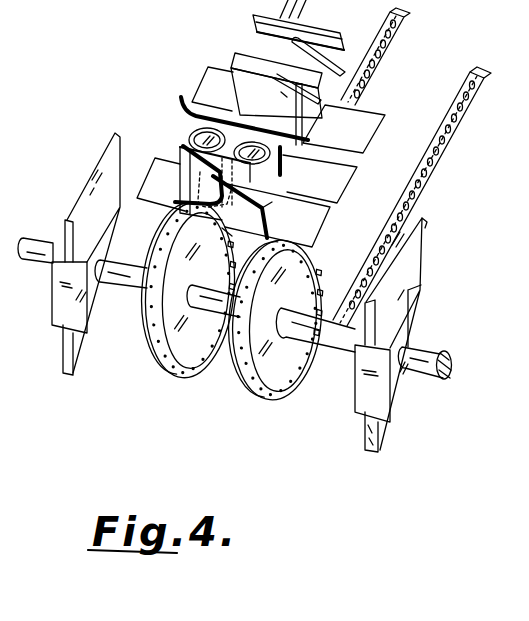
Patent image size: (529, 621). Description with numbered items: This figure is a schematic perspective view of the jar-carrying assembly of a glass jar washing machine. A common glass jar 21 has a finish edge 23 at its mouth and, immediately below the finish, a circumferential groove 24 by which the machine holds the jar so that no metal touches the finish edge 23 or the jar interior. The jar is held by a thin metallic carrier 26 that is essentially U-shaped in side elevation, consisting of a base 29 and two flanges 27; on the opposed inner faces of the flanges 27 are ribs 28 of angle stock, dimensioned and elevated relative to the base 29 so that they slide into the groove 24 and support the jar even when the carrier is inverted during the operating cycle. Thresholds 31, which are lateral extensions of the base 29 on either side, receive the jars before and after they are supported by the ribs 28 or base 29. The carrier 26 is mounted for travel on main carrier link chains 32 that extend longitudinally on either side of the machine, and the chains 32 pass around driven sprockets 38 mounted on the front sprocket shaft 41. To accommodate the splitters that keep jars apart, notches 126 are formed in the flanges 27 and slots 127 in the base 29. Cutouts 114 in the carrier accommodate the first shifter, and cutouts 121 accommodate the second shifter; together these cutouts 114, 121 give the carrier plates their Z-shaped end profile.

The glass jar 21 is at (268, 208).
The finish edge 23 is at (196, 130).
The circumferential groove 24 is at (287, 160).
The carrier 26 is at (357, 115).
The flange 27 is at (276, 85).
The rib 28 is at (182, 97).
The base 29 is at (305, 52).
The threshold 31 is at (310, 235).
The main carrier link chain 32 is at (382, 18).
The driven sprocket 38 is at (205, 362).
The front sprocket shaft 41 is at (196, 311).
The cutout 114 is at (325, 67).
The cutout 121 is at (272, 94).
The notch 126 is at (303, 87).
The slot 127 is at (283, 96).